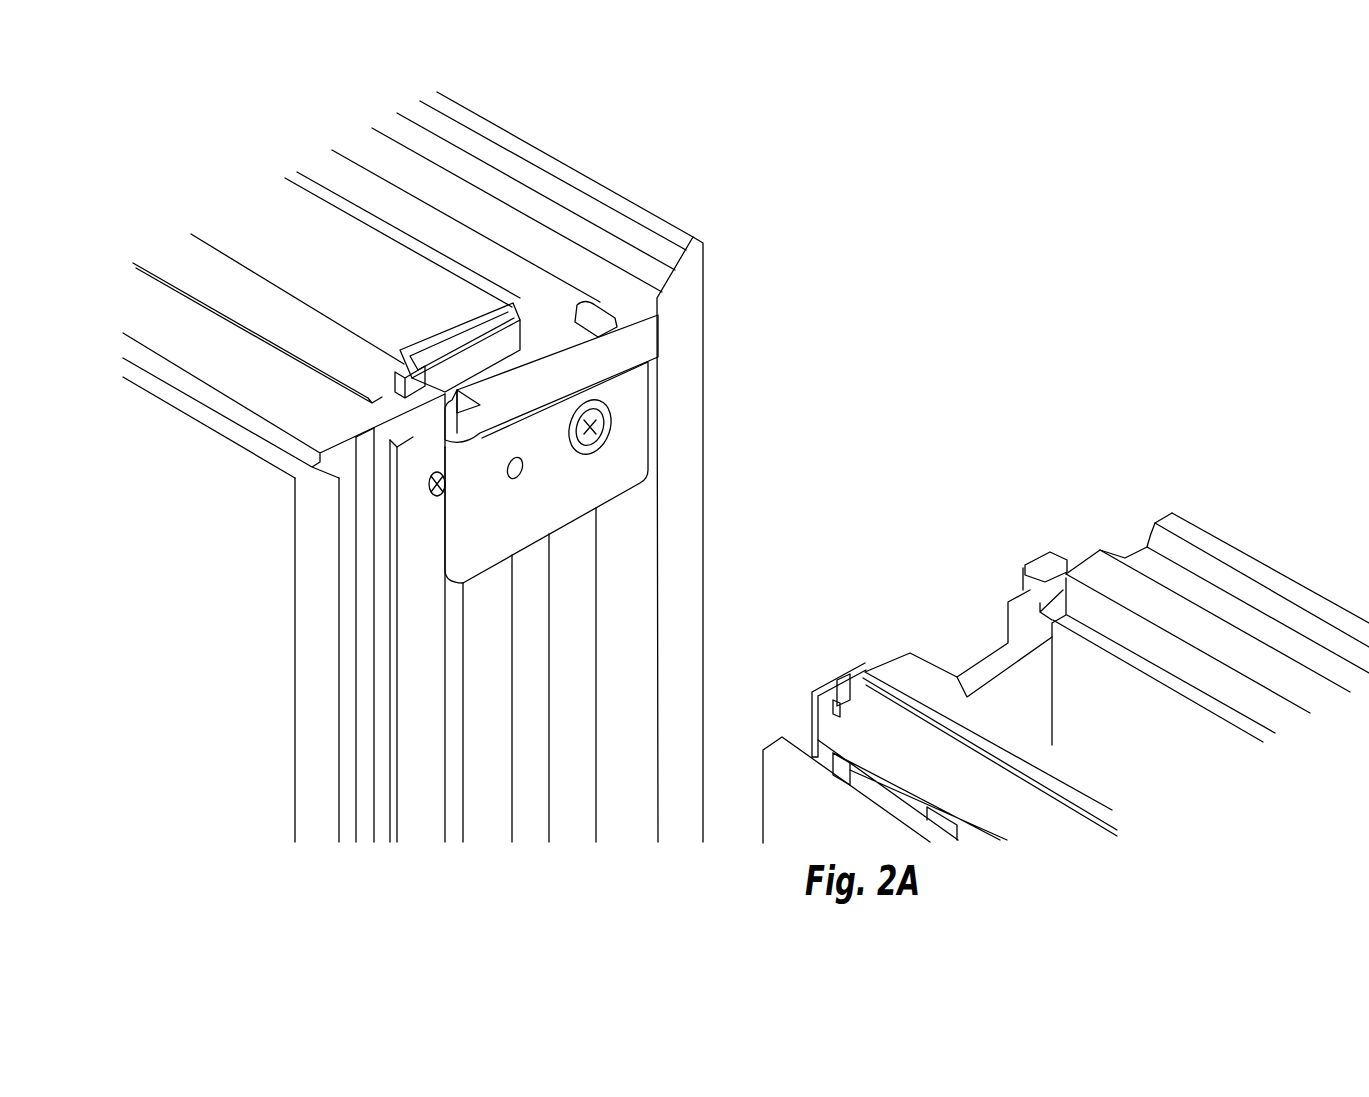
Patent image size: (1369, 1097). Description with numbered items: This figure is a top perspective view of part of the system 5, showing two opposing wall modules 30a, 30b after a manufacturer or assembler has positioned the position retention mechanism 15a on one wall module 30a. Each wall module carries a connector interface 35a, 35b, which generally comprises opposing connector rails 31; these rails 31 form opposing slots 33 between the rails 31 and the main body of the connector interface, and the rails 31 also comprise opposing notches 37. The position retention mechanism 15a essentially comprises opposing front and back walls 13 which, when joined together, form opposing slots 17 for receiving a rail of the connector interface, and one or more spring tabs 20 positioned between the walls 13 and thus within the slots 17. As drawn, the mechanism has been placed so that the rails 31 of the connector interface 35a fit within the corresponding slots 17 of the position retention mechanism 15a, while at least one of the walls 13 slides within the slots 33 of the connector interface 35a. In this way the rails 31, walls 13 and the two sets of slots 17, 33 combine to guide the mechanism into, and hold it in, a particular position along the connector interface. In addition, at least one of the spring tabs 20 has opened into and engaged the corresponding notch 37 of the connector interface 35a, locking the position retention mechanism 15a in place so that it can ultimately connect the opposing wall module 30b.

The system 5 is at (1152, 77).
The walls 13 is at (399, 388).
The position retention mechanism 15a is at (531, 296).
The slots 17 is at (585, 302).
The spring tabs 20 is at (445, 497).
The wall module 30a is at (663, 203).
The wall module 30b is at (1239, 534).
The connector rails 31 is at (623, 752).
The slots 33 is at (610, 270).
The connector interface 35a is at (456, 322).
The connector interface 35b is at (1020, 678).
The notches 37 is at (437, 470).